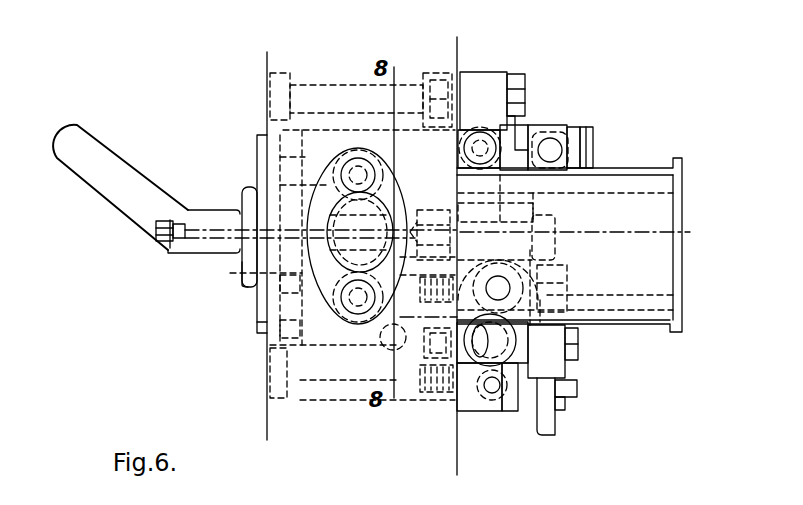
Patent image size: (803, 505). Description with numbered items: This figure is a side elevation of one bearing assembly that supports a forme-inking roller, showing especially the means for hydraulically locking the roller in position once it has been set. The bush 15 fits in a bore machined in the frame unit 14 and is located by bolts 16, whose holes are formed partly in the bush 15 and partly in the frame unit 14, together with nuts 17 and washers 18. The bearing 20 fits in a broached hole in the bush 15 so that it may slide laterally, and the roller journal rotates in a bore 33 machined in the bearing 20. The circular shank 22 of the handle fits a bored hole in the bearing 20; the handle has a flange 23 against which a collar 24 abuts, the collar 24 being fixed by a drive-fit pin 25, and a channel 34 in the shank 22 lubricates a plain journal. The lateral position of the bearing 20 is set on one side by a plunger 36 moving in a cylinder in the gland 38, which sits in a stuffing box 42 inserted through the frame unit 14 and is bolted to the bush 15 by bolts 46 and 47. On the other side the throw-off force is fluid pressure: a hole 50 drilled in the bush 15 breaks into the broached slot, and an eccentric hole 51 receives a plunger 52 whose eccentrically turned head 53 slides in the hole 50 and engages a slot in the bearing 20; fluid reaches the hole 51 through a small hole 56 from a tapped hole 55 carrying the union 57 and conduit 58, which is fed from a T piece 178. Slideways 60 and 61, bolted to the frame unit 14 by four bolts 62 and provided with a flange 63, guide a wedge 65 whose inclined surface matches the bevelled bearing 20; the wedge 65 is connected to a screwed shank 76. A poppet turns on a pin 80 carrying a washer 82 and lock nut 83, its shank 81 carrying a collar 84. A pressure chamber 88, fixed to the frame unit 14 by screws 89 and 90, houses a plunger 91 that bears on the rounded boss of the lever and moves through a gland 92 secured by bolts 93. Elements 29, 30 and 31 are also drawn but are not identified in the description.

The frame unit 14 is at (287, 65).
The bush 15 is at (334, 125).
The bolts 16 is at (278, 100).
The nuts 17 is at (440, 78).
The washers 18 is at (436, 88).
The bearing 20 is at (676, 160).
The circular shank 22 is at (318, 215).
The flange 23 is at (246, 196).
The collar 24 is at (246, 281).
The pin 25 is at (296, 298).
The lug 29 is at (275, 365).
The stop 30 is at (274, 337).
The side plate 31 is at (257, 321).
The bore 33 is at (627, 195).
The channel 34 is at (196, 224).
The plunger 36 is at (315, 205).
The gland 38 is at (312, 190).
The stuffing box 42 is at (305, 172).
The bolt 46 is at (358, 150).
The bolt 47 is at (340, 318).
The hole 50 is at (400, 300).
The hole 51 is at (368, 322).
The plunger 52 is at (358, 297).
The head 53 is at (358, 297).
The tapped hole 55 is at (395, 352).
The small hole 56 is at (404, 340).
The union 57 is at (478, 413).
The conduit 58 is at (545, 418).
The slideway 60 is at (478, 90).
The slideway 61 is at (462, 413).
The bolts 62 is at (515, 80).
The flange 63 is at (522, 150).
The wedge 65 is at (512, 150).
The screwed shank 76 is at (490, 132).
The pin 80 is at (555, 145).
The shank 81 is at (572, 147).
The washer 82 is at (585, 152).
The lock nut 83 is at (592, 163).
The collar 84 is at (573, 177).
The pressure chamber or cylinder 88 is at (533, 412).
The screw 89 is at (547, 295).
The screw 90 is at (567, 390).
The plunger 91 is at (580, 340).
The gland 92 is at (545, 262).
The bolts 93 is at (550, 278).
The T piece 178 is at (555, 357).